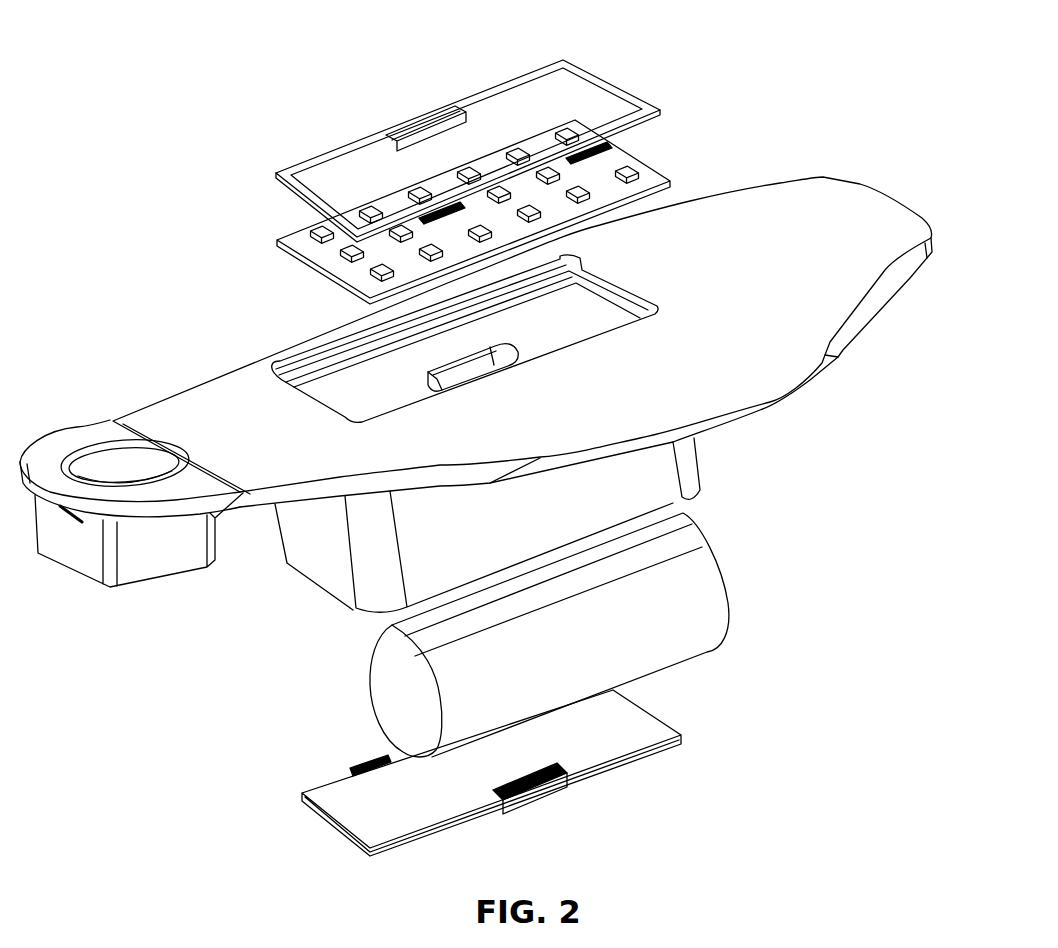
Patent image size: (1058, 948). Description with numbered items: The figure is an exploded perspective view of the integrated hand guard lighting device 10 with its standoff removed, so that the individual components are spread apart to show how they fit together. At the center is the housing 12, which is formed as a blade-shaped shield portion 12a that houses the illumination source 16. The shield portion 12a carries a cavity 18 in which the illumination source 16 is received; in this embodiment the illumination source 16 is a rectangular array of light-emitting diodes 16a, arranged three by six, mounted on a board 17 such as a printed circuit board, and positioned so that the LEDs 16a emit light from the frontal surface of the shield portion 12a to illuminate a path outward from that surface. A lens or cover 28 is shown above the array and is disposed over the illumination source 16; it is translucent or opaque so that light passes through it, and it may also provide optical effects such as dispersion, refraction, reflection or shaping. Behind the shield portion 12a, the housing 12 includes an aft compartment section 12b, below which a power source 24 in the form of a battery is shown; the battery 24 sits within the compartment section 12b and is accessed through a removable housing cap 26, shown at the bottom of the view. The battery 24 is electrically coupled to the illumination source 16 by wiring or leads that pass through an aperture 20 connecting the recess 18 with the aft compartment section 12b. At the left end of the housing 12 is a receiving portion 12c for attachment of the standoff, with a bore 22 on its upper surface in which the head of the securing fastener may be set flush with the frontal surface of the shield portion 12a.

The integrated hand guard lighting device 10 is at (212, 55).
The housing 12 is at (710, 258).
The blade-shaped shield portion 12a is at (825, 177).
The aft compartment section 12b is at (351, 608).
The receiving portion 12c is at (158, 584).
The illumination source 16 is at (242, 220).
The light-emitting diodes 16a is at (645, 185).
The board 17 is at (280, 240).
The cavity 18 is at (306, 356).
The aperture 20 is at (437, 385).
The bore 22 is at (175, 452).
The power source 24 is at (729, 597).
The removable housing cap 26 is at (318, 792).
The cover 28 is at (618, 85).